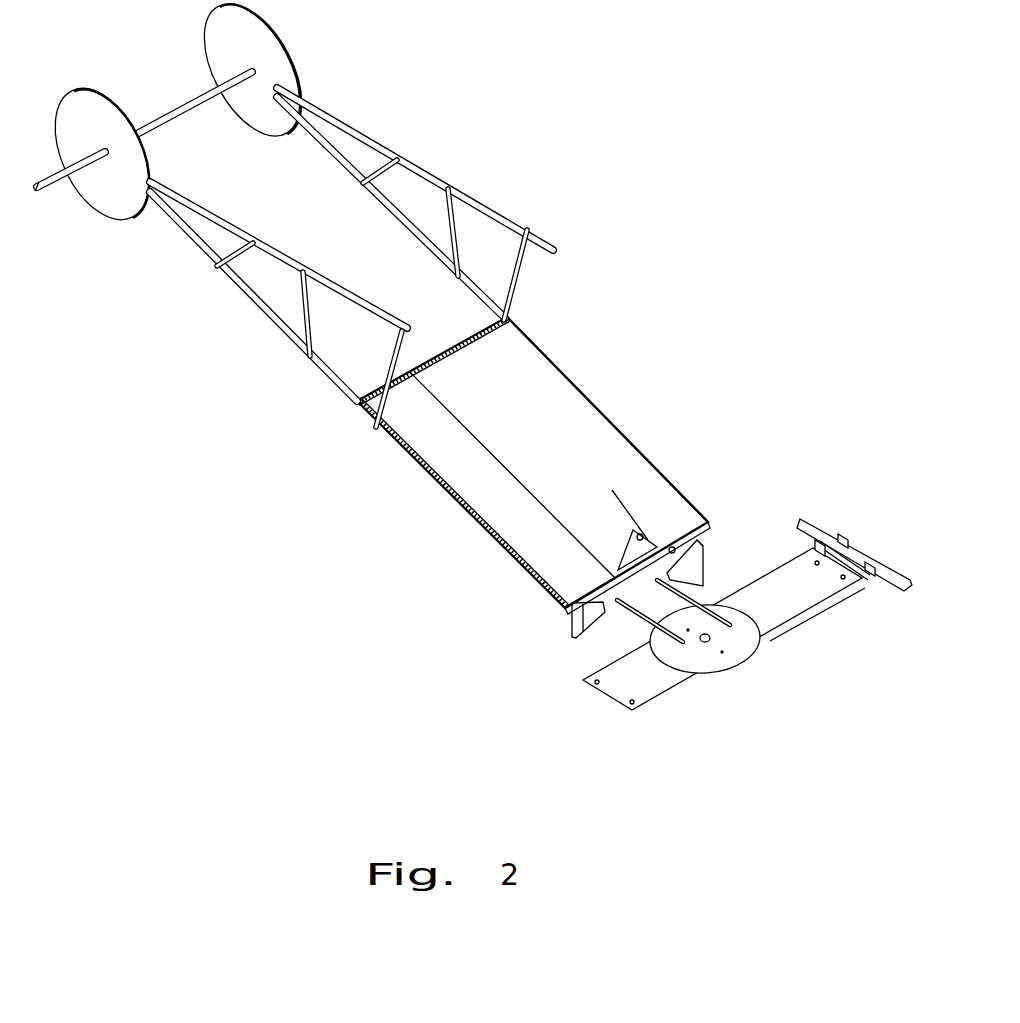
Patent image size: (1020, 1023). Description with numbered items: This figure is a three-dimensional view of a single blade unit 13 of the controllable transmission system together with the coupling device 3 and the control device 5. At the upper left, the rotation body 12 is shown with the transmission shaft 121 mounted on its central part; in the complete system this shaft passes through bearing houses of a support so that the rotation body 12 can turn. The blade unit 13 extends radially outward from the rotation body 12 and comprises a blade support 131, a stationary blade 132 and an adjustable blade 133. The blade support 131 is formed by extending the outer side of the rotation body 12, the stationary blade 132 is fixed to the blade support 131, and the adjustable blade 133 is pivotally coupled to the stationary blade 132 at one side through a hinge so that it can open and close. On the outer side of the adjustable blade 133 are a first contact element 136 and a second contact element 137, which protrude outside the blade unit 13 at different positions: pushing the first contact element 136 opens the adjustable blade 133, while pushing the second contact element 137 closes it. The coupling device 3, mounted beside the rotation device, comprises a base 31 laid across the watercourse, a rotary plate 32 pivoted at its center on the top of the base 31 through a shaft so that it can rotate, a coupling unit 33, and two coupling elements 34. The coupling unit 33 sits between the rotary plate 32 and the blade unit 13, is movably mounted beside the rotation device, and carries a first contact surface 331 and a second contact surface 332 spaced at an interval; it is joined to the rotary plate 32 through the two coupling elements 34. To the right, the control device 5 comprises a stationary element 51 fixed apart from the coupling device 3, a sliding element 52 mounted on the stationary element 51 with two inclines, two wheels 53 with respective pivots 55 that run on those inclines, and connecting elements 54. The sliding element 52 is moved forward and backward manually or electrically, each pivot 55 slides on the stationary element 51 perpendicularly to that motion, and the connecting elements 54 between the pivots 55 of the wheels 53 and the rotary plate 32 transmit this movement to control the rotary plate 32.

The rotation body 12 is at (428, 173).
The transmission shaft 121 is at (60, 196).
The blade unit 13 is at (542, 457).
The blade support 131 is at (442, 493).
The stationary blade 132 is at (532, 542).
The adjustable blade 133 is at (520, 368).
The first contact element 136 is at (673, 548).
The second contact element 137 is at (650, 538).
The coupling device 3 is at (697, 613).
The base 31 is at (617, 690).
The rotary plate 32 is at (746, 650).
The coupling unit 33 is at (701, 548).
The first contact surface 331 is at (703, 560).
The second contact surface 332 is at (593, 612).
The coupling element 34 is at (712, 606).
The control device 5 is at (843, 533).
The stationary element 51 is at (868, 578).
The sliding element 52 is at (888, 575).
The wheel 53 is at (843, 538).
The connecting element 54 is at (797, 607).
The pivot 55 is at (818, 547).